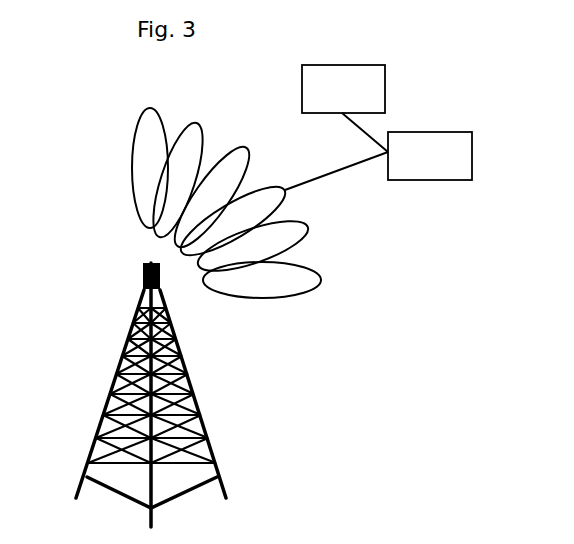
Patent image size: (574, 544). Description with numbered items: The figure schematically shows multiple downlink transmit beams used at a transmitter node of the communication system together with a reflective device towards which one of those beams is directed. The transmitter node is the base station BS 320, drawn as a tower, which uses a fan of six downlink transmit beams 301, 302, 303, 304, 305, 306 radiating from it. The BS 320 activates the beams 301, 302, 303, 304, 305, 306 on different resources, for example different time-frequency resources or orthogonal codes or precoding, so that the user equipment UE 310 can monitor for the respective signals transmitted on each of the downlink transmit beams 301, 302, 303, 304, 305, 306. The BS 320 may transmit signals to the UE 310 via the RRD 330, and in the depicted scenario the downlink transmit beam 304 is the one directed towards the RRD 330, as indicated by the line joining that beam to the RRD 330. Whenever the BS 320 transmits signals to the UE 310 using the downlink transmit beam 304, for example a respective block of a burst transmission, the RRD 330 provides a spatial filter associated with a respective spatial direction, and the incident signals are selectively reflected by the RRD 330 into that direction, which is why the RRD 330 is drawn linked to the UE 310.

The downlink transmit beam 301 is at (138, 125).
The downlink transmit beam 302 is at (203, 125).
The downlink transmit beam 303 is at (226, 148).
The downlink transmit beam 304 is at (262, 188).
The downlink transmit beam 305 is at (298, 242).
The downlink transmit beam 306 is at (308, 293).
The UE 310 is at (385, 88).
The BS 320 is at (88, 450).
The RRD 330 is at (472, 155).